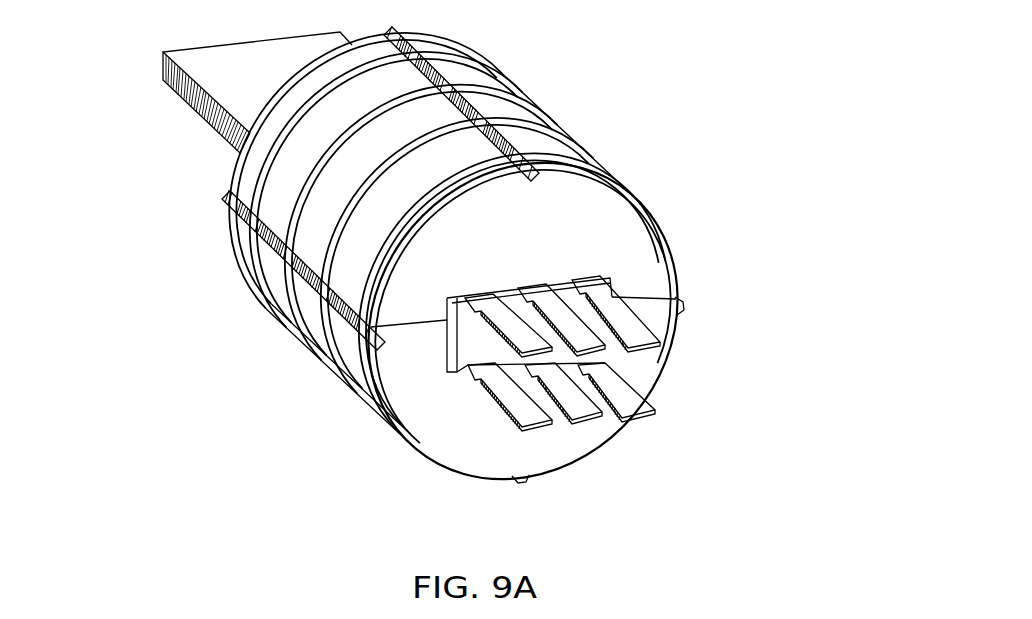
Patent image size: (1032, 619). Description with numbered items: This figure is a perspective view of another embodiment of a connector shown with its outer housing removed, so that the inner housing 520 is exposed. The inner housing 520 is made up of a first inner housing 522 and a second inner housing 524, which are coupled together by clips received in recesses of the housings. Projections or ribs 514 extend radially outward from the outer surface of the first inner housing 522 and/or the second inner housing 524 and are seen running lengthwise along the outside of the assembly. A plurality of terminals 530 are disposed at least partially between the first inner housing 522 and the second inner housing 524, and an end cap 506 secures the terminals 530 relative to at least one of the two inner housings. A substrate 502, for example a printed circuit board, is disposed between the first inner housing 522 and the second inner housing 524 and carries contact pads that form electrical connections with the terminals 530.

The substrate 502 is at (183, 101).
The end cap 506 is at (467, 350).
The projections or ribs 514 is at (468, 107).
The inner housing 520 is at (730, 304).
The first inner housing 522 is at (420, 285).
The second inner housing 524 is at (397, 358).
The terminals 530 is at (627, 377).